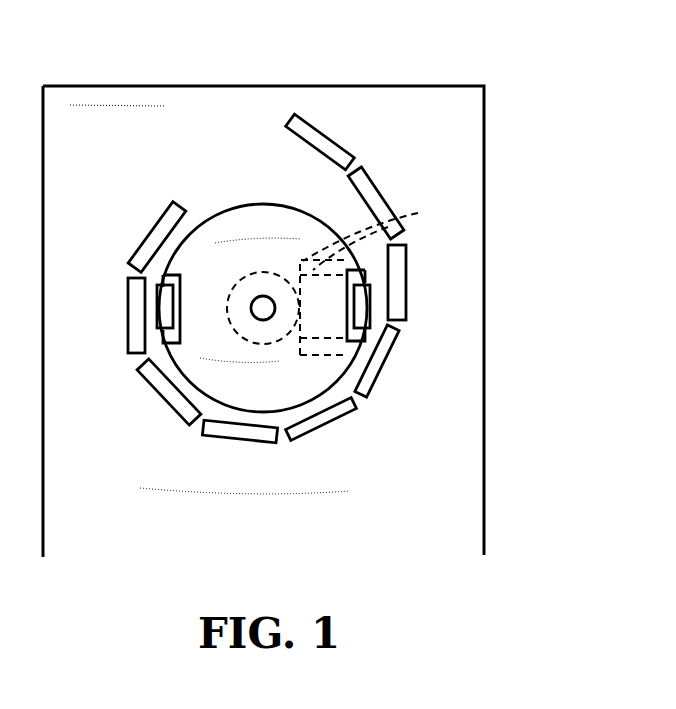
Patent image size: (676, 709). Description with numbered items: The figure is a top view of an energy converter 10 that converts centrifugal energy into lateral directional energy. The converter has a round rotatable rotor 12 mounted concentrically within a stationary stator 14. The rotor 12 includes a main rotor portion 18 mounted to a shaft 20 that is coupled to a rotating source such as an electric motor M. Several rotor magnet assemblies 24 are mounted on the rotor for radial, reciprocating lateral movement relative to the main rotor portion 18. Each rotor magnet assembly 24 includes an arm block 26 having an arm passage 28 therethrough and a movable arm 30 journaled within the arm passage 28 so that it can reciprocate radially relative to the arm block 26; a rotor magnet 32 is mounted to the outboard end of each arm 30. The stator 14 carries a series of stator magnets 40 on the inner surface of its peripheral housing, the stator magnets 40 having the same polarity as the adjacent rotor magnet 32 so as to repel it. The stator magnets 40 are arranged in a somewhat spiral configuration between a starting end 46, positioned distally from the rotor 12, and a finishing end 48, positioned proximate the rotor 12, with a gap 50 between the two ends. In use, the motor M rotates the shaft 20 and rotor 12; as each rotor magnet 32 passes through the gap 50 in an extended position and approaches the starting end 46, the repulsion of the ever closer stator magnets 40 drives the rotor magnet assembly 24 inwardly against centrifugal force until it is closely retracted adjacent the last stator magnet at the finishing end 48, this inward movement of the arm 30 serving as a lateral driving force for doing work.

The energy converter 10 is at (101, 518).
The rotor 12 is at (345, 397).
The stator 14 is at (413, 368).
The main rotor portion 18 is at (247, 213).
The shaft 20 is at (263, 312).
The rotor magnet assembly 24 is at (187, 272).
The arm block 26 is at (102, 397).
The arm passage 28 is at (383, 193).
The movable arm 30 is at (353, 275).
The rotor magnet 32 is at (163, 304).
The stator magnet 40 is at (320, 418).
The starting end 46 is at (286, 117).
The finishing end 48 is at (180, 206).
The gap 50 is at (228, 177).
The electric motor M is at (263, 272).